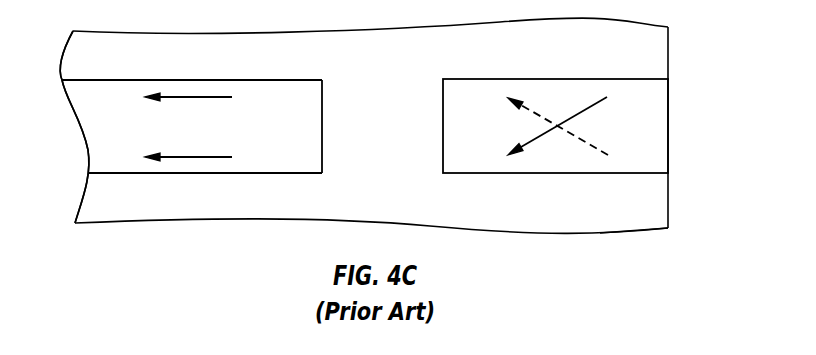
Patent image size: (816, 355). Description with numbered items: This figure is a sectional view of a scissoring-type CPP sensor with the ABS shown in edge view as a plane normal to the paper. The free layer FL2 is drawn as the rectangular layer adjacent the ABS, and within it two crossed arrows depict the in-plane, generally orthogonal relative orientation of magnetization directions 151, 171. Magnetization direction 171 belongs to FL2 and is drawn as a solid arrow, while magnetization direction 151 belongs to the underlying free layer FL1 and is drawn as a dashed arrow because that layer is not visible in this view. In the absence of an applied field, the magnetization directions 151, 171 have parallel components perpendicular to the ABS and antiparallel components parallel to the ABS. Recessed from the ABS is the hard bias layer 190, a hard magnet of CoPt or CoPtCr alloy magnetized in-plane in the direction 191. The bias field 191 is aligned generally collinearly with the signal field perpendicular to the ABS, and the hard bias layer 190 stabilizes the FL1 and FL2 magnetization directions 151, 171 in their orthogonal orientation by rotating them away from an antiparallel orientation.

The hard bias layer 190 is at (85, 152).
The magnetization direction of hard bias layer 191 is at (227, 97).
The magnetization direction of FL2 171 is at (528, 142).
The magnetization direction of FL1 151 is at (592, 145).
The second free layer FL2 is at (660, 105).
The air bearing surface ABS is at (668, 207).